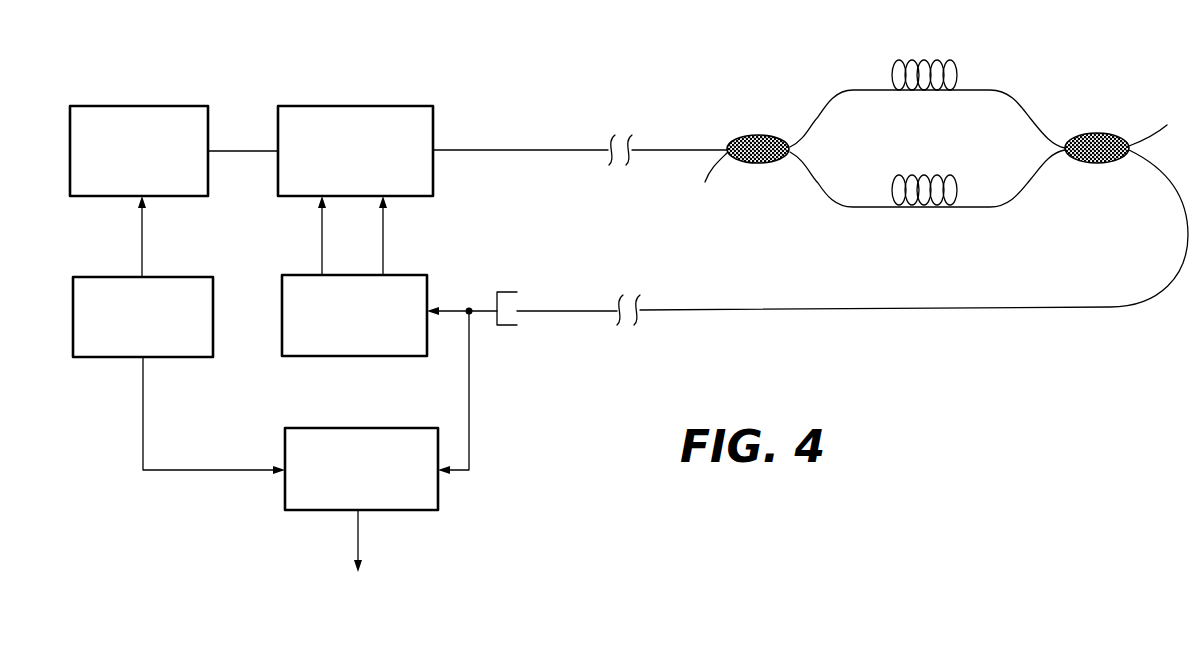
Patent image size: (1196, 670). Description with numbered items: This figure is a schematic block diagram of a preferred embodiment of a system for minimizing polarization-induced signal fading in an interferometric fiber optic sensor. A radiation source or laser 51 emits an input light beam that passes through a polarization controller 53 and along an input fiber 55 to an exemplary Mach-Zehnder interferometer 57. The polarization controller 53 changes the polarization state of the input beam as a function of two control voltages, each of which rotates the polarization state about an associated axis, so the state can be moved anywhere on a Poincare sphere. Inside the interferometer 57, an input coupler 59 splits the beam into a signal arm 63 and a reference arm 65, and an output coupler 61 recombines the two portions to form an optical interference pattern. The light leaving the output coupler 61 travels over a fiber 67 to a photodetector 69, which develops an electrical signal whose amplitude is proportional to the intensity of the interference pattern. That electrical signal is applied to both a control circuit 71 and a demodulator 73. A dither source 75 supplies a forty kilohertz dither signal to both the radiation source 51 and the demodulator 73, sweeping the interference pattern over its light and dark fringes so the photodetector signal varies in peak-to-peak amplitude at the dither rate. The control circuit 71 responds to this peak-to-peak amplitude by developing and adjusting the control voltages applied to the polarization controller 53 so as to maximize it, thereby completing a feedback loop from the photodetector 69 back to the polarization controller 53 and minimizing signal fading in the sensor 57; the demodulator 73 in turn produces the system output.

The radiation source 51 is at (182, 106).
The polarization controller 53 is at (352, 106).
The input fiber 55 is at (574, 148).
The Mach-Zehnder interferometer 57 is at (1023, 71).
The input coupler 59 is at (766, 135).
The output coupler 61 is at (1103, 133).
The signal arm 63 is at (919, 60).
The reference arm 65 is at (946, 175).
The output fiber 67 is at (898, 307).
The photodetector 69 is at (502, 291).
The control circuit 71 is at (419, 275).
The demodulator 73 is at (366, 428).
The dither source 75 is at (193, 277).